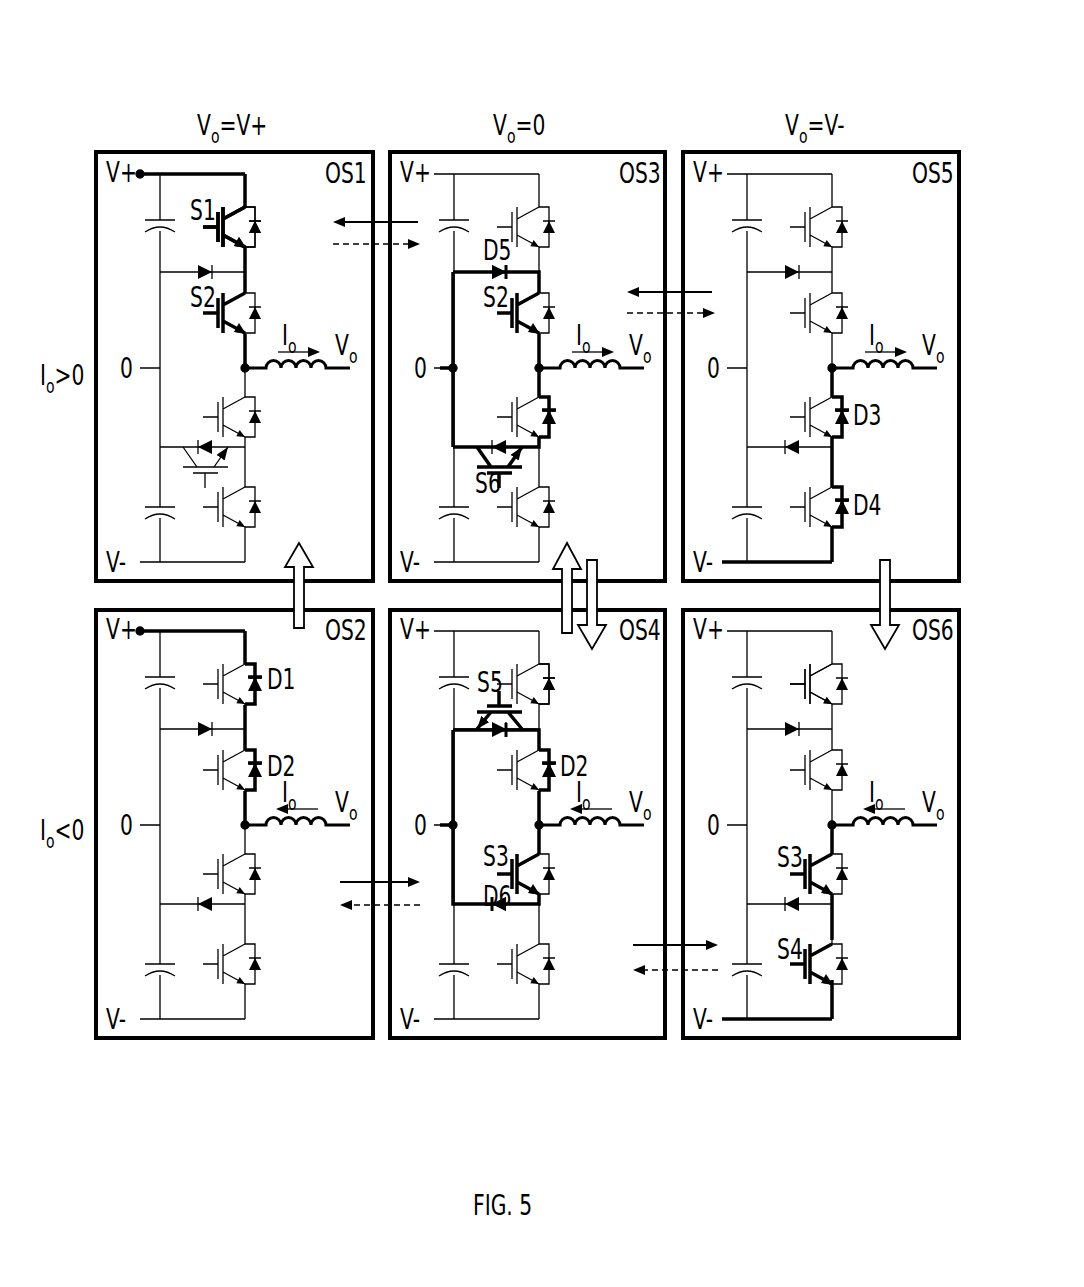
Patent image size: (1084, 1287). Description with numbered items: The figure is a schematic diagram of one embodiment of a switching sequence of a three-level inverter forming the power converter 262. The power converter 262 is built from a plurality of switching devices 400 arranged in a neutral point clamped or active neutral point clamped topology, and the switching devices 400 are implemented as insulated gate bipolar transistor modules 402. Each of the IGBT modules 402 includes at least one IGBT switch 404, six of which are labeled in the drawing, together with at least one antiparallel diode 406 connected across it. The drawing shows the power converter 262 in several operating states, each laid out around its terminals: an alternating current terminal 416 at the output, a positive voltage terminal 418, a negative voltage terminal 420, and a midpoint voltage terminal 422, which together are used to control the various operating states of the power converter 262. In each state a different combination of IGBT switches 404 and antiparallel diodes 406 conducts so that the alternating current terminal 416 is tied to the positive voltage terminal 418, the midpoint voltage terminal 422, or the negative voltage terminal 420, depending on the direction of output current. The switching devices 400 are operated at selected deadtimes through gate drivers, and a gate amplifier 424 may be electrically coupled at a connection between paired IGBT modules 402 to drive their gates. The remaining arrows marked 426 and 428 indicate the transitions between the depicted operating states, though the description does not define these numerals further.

The power converter 262 is at (148, 64).
The switching devices 400 is at (262, 218).
The IGBT modules 402 is at (546, 595).
The IGBT switch 404 is at (212, 205).
The antiparallel diode 406 is at (260, 235).
The alternating current (AC) terminal 416 is at (247, 370).
The positive voltage terminal 418 is at (138, 172).
The negative voltage terminal 420 is at (725, 562).
The midpoint voltage terminal 422 is at (450, 368).
The gate amplifier 424 is at (381, 222).
The reverse transition arrow 426 is at (362, 247).
The state transition arrow 428 is at (307, 568).